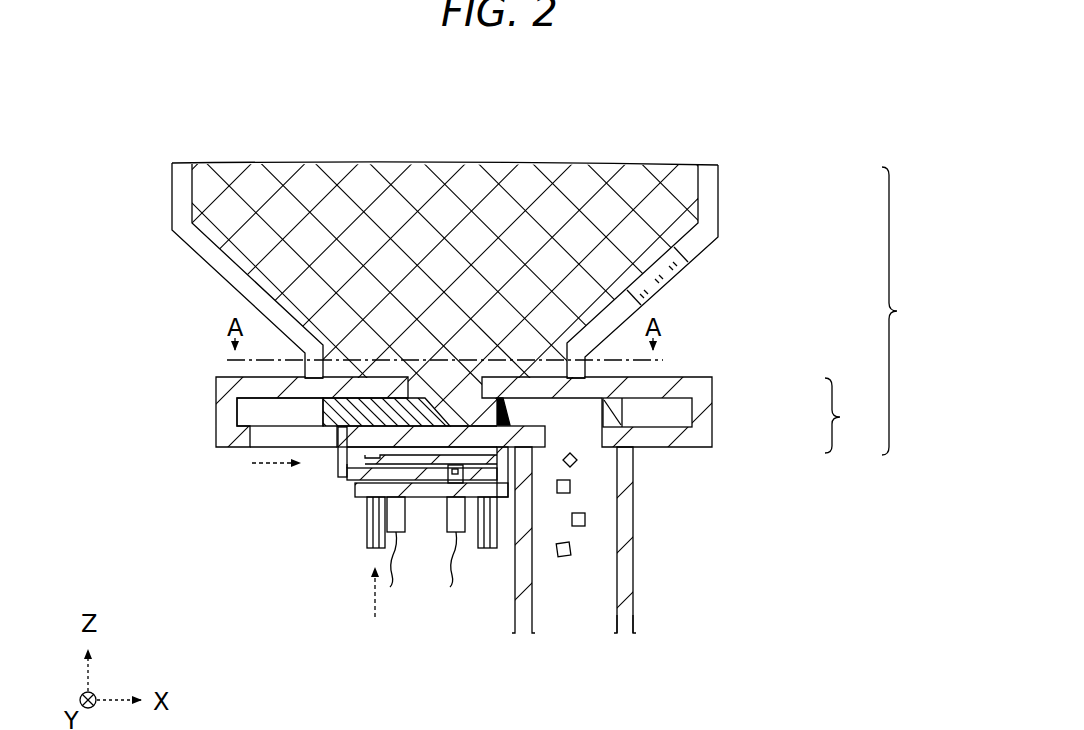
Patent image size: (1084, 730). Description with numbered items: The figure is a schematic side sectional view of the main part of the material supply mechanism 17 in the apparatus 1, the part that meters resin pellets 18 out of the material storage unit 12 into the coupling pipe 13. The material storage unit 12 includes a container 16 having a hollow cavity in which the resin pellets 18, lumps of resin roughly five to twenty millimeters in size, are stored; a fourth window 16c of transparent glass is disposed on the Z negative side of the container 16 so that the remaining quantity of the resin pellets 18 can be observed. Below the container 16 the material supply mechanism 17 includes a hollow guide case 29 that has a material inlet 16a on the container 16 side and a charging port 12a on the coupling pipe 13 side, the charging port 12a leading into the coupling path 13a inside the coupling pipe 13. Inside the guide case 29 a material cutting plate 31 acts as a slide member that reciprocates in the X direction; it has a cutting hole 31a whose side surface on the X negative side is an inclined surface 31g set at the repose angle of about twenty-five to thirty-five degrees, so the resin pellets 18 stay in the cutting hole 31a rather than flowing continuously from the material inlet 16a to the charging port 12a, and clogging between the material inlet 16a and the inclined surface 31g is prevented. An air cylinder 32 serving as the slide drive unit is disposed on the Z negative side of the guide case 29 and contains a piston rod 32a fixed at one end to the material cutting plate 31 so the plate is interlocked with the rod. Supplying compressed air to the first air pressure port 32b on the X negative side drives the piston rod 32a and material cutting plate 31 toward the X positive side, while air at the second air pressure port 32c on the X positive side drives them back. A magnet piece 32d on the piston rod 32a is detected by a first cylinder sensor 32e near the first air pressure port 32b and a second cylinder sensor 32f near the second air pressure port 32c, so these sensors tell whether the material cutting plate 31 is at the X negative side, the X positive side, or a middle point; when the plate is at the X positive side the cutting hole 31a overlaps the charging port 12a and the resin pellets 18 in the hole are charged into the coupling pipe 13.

The powder supply device 1 is at (779, 111).
The material storage unit 12 is at (909, 311).
The charging port 12a is at (597, 444).
The coupling pipe 13 is at (633, 500).
The coupling path 13a is at (619, 613).
The container 16 is at (710, 190).
The material inlet 16a is at (400, 371).
The fourth window 16c is at (652, 289).
The material supply mechanism 17 is at (849, 415).
The resin pellets 18 is at (521, 188).
The guide case 29 is at (703, 437).
The material cutting plate 31 is at (323, 411).
The cutting hole 31a is at (597, 393).
The inclined surface 31g is at (496, 401).
The air cylinder 32 is at (331, 492).
The piston rod 32a is at (337, 471).
The first air pressure port 32b is at (367, 541).
The second air pressure port 32c is at (498, 546).
The magnet piece 32d is at (448, 486).
The first cylinder sensor 32e is at (399, 515).
The second cylinder sensor 32f is at (465, 515).